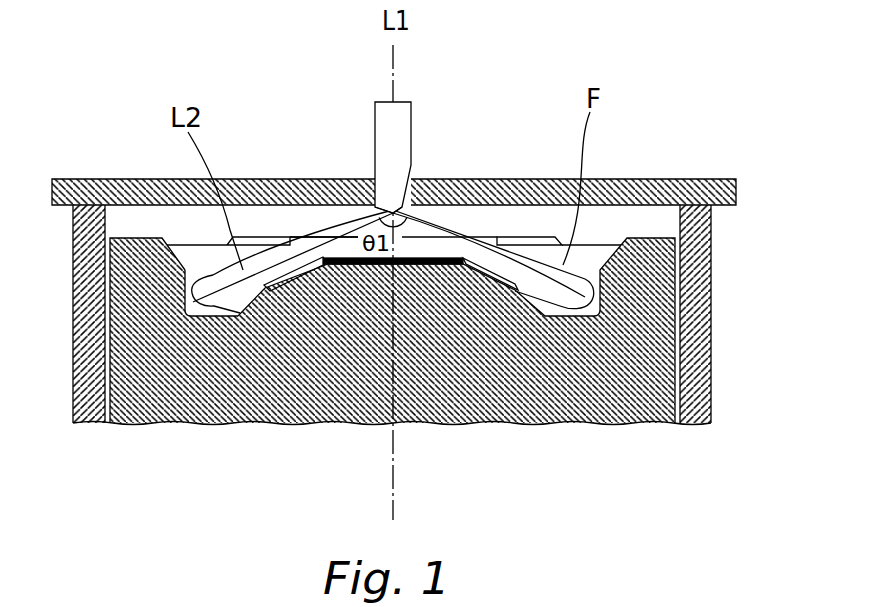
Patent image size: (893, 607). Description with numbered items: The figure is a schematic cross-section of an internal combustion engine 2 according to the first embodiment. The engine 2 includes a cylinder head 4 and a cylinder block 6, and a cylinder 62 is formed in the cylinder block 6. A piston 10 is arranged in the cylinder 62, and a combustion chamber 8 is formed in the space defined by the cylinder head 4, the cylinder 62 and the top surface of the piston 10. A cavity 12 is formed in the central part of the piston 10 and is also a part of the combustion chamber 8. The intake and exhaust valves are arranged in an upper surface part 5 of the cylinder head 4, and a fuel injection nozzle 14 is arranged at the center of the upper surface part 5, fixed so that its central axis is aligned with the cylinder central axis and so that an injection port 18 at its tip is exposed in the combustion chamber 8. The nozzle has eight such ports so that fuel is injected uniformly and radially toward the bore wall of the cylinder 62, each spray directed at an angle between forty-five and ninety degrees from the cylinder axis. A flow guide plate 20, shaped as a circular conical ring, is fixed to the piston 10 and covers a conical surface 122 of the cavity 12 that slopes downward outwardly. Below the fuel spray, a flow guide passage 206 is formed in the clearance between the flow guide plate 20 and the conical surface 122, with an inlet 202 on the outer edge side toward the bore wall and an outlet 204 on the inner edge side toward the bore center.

The engine 2 is at (116, 156).
The cylinder head 4 is at (633, 164).
The upper surface part 5 is at (222, 247).
The cylinder block 6 is at (68, 305).
The combustion chamber 8 is at (153, 223).
The piston 10 is at (628, 321).
The cavity 12 is at (227, 316).
The fuel injection nozzle 14 is at (411, 135).
The injection port 18 is at (416, 158).
The flow guide plate 20 is at (355, 247).
The cylinder 62 is at (674, 232).
The conical surface 122 is at (470, 283).
The inlet 202 is at (268, 292).
The outlet 204 is at (378, 265).
The flow guide passage 206 is at (316, 266).